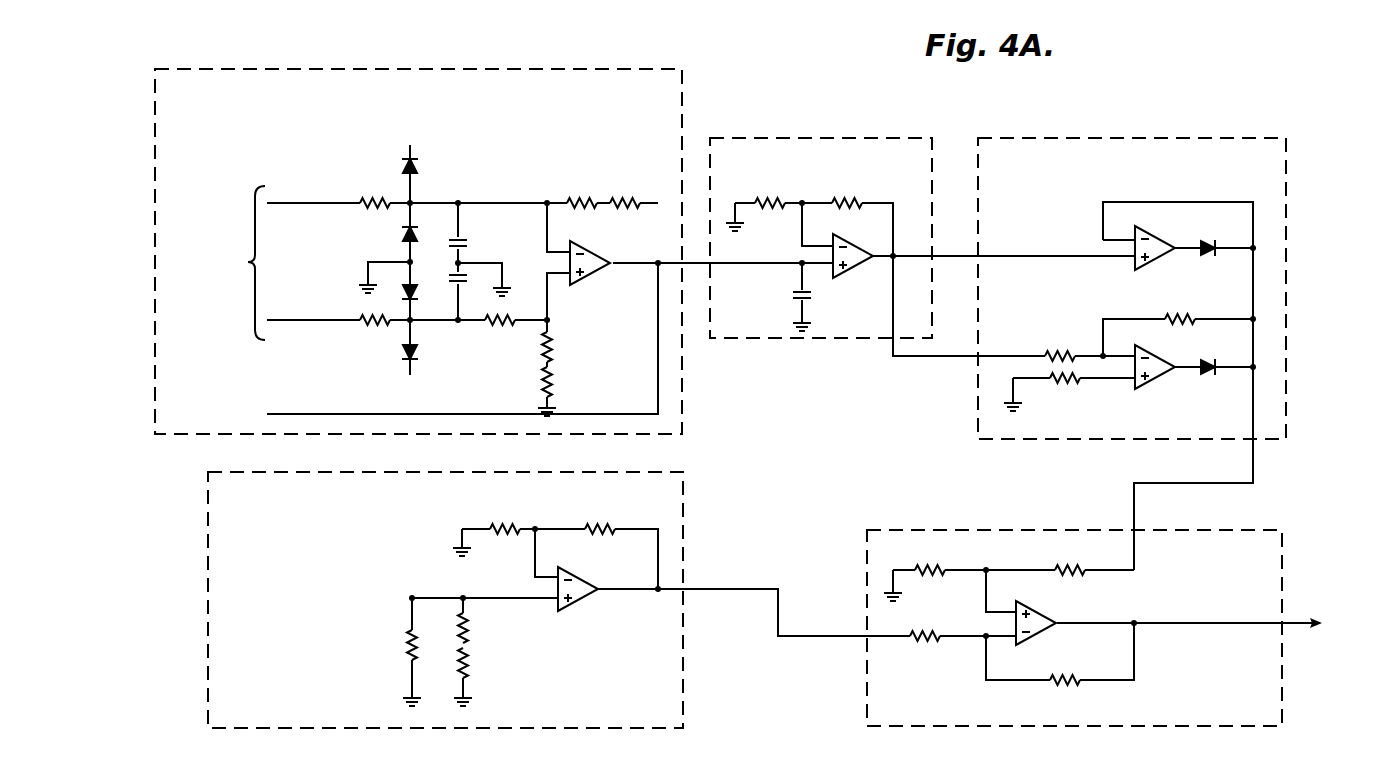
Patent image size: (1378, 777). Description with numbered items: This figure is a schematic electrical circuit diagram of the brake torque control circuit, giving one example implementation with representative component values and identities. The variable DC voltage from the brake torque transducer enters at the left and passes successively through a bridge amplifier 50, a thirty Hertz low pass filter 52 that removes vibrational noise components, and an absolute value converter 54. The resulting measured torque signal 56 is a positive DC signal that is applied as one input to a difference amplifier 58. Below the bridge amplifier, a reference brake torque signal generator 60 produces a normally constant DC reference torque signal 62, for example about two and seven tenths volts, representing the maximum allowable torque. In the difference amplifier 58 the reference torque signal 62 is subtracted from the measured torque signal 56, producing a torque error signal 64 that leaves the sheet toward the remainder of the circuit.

The bridge amplifier 50 is at (503, 71).
The 30 Hertz low pass filter 52 is at (862, 139).
The absolute value converter 54 is at (1152, 139).
The measured torque signal 56 is at (1255, 470).
The difference amplifier 58 is at (863, 694).
The reference brake torque signal generator 60 is at (687, 683).
The reference torque signal 62 is at (785, 616).
The torque error signal 64 is at (1320, 630).